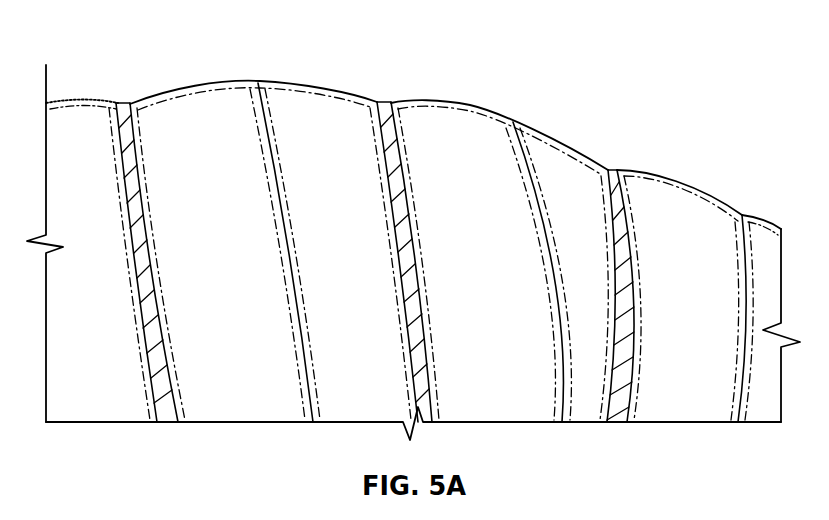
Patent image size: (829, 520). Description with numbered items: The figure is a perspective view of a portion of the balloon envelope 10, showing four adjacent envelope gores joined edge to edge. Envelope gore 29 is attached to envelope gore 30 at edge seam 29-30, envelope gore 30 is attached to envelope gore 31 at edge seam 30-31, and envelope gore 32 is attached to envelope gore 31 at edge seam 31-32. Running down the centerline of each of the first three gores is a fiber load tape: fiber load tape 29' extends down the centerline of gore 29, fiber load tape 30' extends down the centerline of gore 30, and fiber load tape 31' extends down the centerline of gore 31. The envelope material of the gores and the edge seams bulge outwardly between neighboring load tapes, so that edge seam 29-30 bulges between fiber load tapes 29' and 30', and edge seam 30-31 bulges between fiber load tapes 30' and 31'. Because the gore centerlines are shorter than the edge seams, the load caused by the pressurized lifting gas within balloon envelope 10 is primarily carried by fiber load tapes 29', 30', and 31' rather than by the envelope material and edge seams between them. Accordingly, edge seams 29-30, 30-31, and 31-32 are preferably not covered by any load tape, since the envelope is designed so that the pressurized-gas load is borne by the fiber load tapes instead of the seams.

The balloon envelope 10 is at (660, 53).
The envelope gore 29 is at (82, 83).
The fiber load tape 29' is at (147, 235).
The envelope gore 30 is at (253, 72).
The fiber load tape 30' is at (404, 235).
The envelope gore 31 is at (566, 160).
The fiber load tape 31' is at (623, 268).
The envelope gore 32 is at (765, 242).
The edge seam 29-30 is at (280, 217).
The edge seam 30-31 is at (543, 207).
The edge seam 31-32 is at (747, 317).